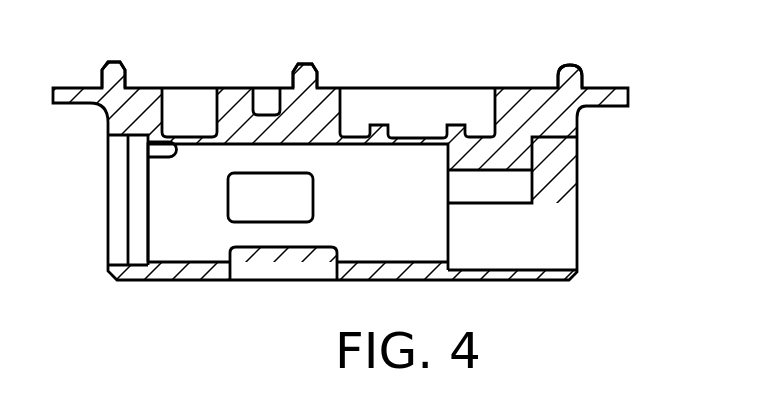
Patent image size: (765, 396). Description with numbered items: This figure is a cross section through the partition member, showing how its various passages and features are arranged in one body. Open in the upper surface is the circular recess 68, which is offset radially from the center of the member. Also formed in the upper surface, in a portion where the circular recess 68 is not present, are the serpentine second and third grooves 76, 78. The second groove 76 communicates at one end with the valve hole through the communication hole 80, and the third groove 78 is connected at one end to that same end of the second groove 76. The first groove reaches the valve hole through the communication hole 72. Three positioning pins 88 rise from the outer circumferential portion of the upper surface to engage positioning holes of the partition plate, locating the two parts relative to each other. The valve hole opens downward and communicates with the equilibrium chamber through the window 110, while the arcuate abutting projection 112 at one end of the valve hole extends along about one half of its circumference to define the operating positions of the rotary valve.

The circular recess 68 is at (495, 106).
The communication hole 72 is at (257, 222).
The second groove 76 is at (217, 106).
The third groove 78 is at (277, 110).
The communication hole 80 is at (169, 157).
The positioning pins 88 is at (112, 72).
The window 110 is at (230, 267).
The abutting projection 112 is at (520, 160).